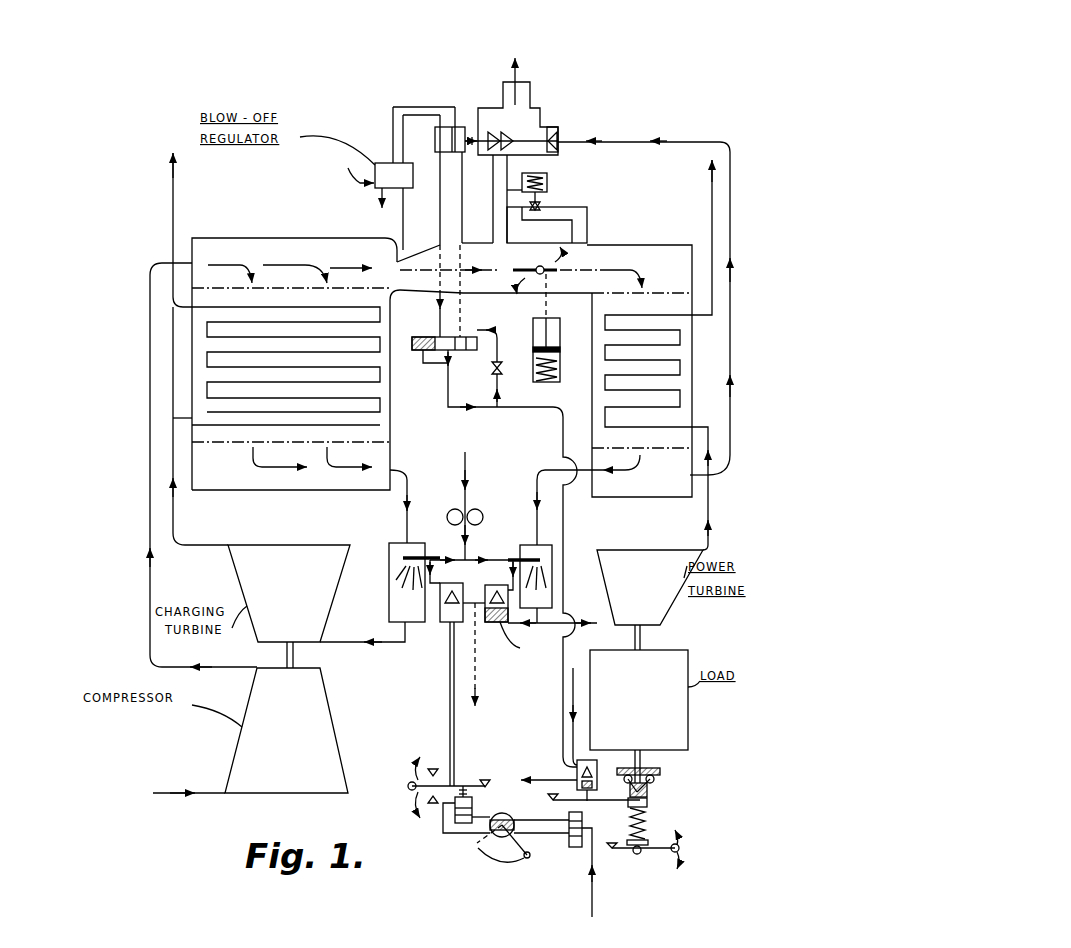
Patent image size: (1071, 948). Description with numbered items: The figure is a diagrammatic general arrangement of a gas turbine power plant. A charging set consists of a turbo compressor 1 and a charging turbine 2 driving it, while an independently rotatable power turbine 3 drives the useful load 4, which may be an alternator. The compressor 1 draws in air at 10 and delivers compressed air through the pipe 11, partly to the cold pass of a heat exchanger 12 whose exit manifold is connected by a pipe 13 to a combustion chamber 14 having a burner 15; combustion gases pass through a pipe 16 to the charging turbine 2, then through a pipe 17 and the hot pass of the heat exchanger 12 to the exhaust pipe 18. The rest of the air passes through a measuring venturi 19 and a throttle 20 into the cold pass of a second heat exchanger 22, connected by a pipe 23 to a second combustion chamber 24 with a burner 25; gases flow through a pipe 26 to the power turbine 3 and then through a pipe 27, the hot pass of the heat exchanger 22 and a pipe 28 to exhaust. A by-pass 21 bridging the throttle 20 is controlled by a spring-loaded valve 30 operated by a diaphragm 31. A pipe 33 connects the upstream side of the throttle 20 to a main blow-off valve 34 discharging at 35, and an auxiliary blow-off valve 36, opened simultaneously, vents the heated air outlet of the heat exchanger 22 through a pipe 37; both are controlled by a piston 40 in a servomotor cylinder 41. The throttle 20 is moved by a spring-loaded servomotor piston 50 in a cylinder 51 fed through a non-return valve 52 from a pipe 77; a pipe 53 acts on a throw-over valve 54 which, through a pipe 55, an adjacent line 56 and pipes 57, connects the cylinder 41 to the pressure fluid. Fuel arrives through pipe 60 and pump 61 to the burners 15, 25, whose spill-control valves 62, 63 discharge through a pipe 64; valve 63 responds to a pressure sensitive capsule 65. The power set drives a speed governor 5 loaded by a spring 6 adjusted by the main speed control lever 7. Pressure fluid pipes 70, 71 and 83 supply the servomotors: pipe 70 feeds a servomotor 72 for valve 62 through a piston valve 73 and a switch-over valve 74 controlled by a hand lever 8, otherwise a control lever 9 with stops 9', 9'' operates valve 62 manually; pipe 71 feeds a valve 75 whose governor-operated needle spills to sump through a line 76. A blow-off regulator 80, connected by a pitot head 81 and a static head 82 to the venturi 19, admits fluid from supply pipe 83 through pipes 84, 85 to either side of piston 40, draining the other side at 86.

The turbo compressor 1 is at (286, 730).
The charging turbine 2 is at (289, 606).
The power turbine 3 is at (650, 600).
The useful load 4 is at (639, 700).
The speed governor 5 is at (653, 795).
The spring 6 is at (630, 828).
The main speed control lever 7 is at (646, 865).
The hand lever 8 is at (528, 858).
The control lever 9 is at (432, 788).
The stop 9' is at (419, 822).
The stop 9'' is at (431, 755).
The air intake 10 is at (163, 792).
The pipe 11 is at (182, 580).
The heat exchanger 12 is at (192, 356).
The pipe 13 is at (408, 479).
The combustion chamber 14 is at (388, 593).
The burner 15 is at (413, 555).
The pipe 16 is at (382, 646).
The pipe 17 is at (173, 526).
The exhaust pipe 18 is at (172, 222).
The measuring venturi 19 is at (422, 280).
The throttle 20 is at (521, 268).
The by-pass 21 is at (587, 240).
The second heat exchanger 22 is at (705, 352).
The pipe 23 is at (546, 470).
The second combustion chamber 24 is at (527, 545).
The burner 25 is at (526, 555).
The pipe 26 is at (608, 621).
The pipe 27 is at (707, 512).
The pipe 28 is at (712, 210).
The spring-loaded valve 30 is at (543, 206).
The diaphragm 31 is at (548, 185).
The pipe 33 is at (492, 228).
The main blow-off valve 34 is at (491, 128).
The blow-off outlet 35 is at (524, 87).
The auxiliary blow-off valve 36 is at (563, 124).
The pipe 37 is at (729, 422).
The piston 40 is at (451, 127).
The cylinder 41 is at (435, 140).
The servomotor piston 50 is at (560, 358).
The cylinder 51 is at (553, 340).
The non-return valve 52 is at (498, 374).
The pipe 53 is at (508, 329).
The throw-over valve 54 is at (462, 335).
The pipe 55 is at (461, 205).
The pressure line 56 is at (440, 188).
The pipes 57 is at (448, 372).
The pipe 60 is at (466, 478).
The pump 61 is at (480, 516).
The spill-control valve 62 is at (446, 673).
The spill-control valve 63 is at (488, 591).
The pipe 64 is at (478, 655).
The pressure sensitive capsule 65 is at (517, 646).
The pipe 70 is at (593, 885).
The pipe 71 is at (570, 690).
The servomotor 72 is at (473, 807).
The piston valve 73 is at (573, 848).
The switch-over valve 74 is at (500, 840).
The valve 75 is at (568, 784).
The line 76 is at (556, 775).
The pipe 77 is at (563, 438).
The blow-off regulator 80 is at (378, 163).
The pitot head 81 is at (393, 190).
The static head 82 is at (405, 251).
The pipe 83 is at (347, 167).
The pipe 84 is at (396, 93).
The pipe 85 is at (425, 114).
The drain 86 is at (380, 193).